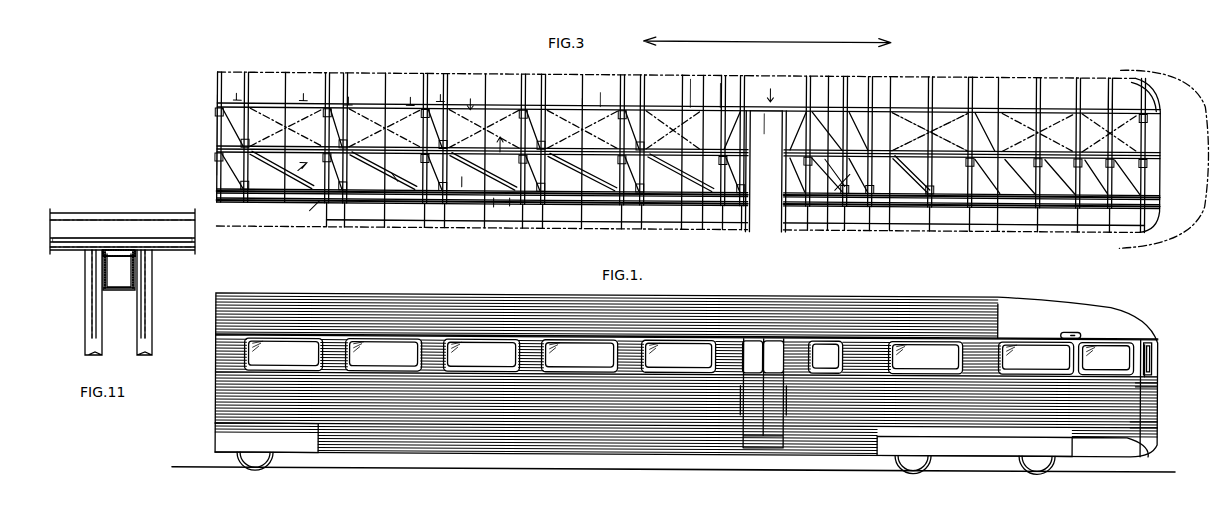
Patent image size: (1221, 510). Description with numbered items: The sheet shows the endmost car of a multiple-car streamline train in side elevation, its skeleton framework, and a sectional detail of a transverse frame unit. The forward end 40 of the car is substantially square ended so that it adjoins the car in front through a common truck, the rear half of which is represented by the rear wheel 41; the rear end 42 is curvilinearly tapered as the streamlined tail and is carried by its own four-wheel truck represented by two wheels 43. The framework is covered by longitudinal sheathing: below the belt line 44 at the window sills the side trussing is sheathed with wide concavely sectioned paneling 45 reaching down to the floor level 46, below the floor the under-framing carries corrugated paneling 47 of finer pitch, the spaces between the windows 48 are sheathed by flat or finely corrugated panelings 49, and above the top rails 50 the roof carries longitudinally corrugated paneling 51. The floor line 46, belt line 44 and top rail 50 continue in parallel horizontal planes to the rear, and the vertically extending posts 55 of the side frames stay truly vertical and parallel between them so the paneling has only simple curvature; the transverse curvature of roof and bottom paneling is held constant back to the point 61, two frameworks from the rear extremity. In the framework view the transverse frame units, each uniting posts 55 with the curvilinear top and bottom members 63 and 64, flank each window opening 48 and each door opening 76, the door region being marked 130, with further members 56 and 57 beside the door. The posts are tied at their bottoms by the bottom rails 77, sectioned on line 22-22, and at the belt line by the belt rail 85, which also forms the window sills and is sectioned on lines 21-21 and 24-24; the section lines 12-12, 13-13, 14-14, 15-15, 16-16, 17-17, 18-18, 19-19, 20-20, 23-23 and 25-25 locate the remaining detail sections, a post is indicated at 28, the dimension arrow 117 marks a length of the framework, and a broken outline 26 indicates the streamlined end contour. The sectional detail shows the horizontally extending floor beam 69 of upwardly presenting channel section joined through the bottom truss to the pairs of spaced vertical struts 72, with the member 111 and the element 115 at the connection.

In FIG. 3, the section line 12-12 is at (237, 93).
In FIG. 3, the section line 13-13 is at (303, 93).
In FIG. 3, the section line 14-14 is at (440, 93).
In FIG. 3, the section line 15-15 is at (348, 96).
In FIG. 3, the section line 16-16 is at (410, 96).
In FIG. 3, the section line 17-17 is at (509, 135).
In FIG. 3, the section line 18-18 is at (324, 201).
In FIG. 3, the section line 19-19 is at (412, 168).
In FIG. 3, the section line 20-20 is at (472, 174).
In FIG. 3, the section line 21-21 is at (310, 160).
In FIG. 3, the section line 22-22 is at (495, 205).
In FIG. 3, the section line 23-23 is at (770, 85).
In FIG. 3, the section line 24-24 is at (511, 205).
In FIG. 3, the section line 25-25 is at (785, 158).
In FIG. 3, the car body outline 26 is at (1200, 133).
In FIG. 3, the side post 28 is at (471, 96).
In FIG. 3, the forward end 40 is at (210, 101).
In FIG. 1, the forward end 40 is at (209, 354).
In FIG. 1, the rear wheel 41 is at (262, 462).
In FIG. 1, the rear end 42 is at (1146, 311).
In FIG. 1, the wheels 43 is at (1020, 472).
In FIG. 1, the belt line 44 is at (215, 372).
In FIG. 1, the paneling 45 is at (662, 430).
In FIG. 1, the floor level 46 is at (412, 428).
In FIG. 1, the corrugated paneling 47 is at (858, 447).
In FIG. 3, the windows 48 is at (482, 120).
In FIG. 1, the windows 48 is at (572, 342).
In FIG. 1, the panelings 49 is at (533, 338).
In FIG. 3, the top rails 50 is at (582, 96).
In FIG. 1, the top rails 50 is at (215, 332).
In FIG. 1, the roof paneling 51 is at (828, 298).
In FIG. 3, the posts 55 is at (288, 184).
In FIG. 3, the diagonal strut 56 is at (832, 172).
In FIG. 3, the diagonal strut 57 is at (842, 185).
In FIG. 3, the point 61 is at (1111, 100).
In FIG. 1, the point 61 is at (1071, 327).
In FIG. 3, the top member 63 is at (634, 93).
In FIG. 3, the bottom member 64 is at (578, 215).
In FIG. 11, the floor beam 69 is at (131, 274).
In FIG. 11, the vertical struts 72 is at (88, 314).
In FIG. 3, the door opening 76 is at (775, 179).
In FIG. 3, the bottom rails 77 is at (912, 205).
In FIG. 3, the belt rail 85 is at (950, 148).
In FIG. 11, the roof carline 111 is at (146, 208).
In FIG. 11, the connecting plate 115 is at (104, 270).
In FIG. 3, the car length dimension 117 is at (767, 35).
In FIG. 3, the door opening 130 is at (765, 171).